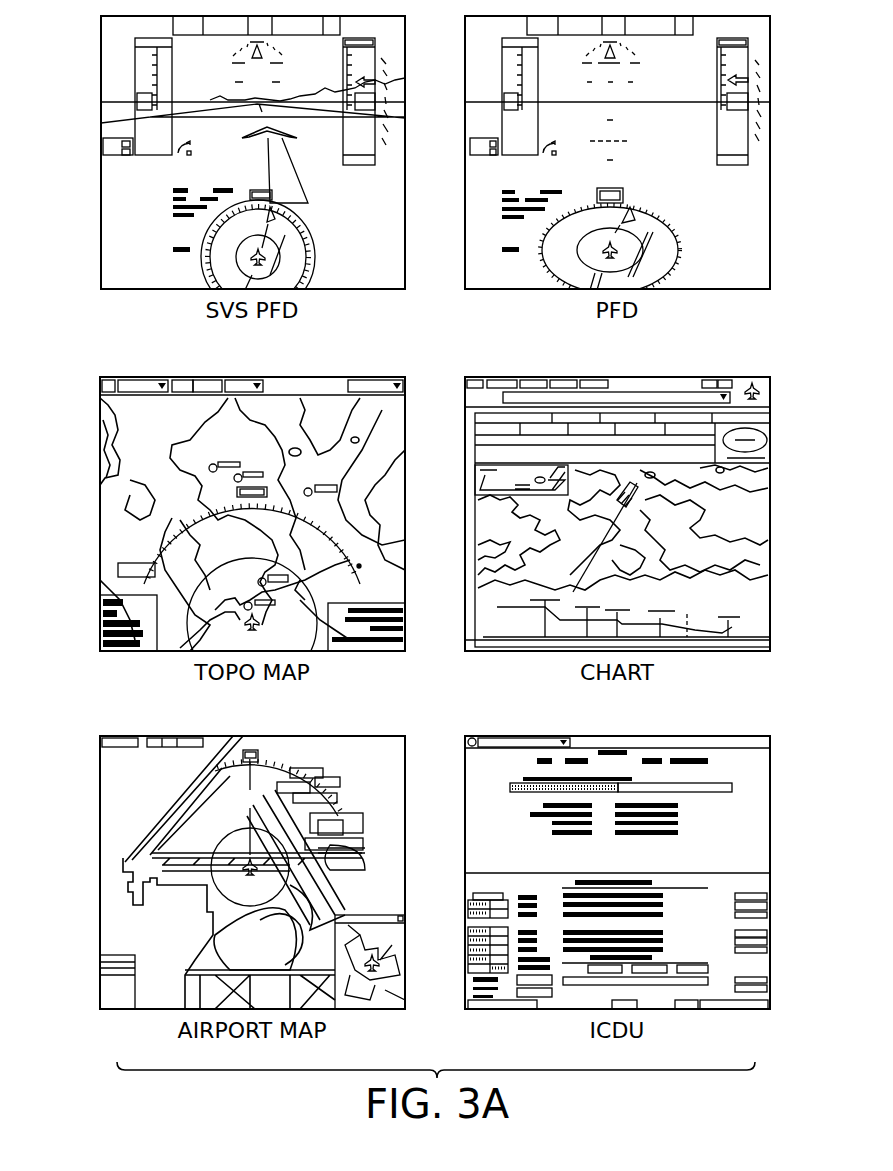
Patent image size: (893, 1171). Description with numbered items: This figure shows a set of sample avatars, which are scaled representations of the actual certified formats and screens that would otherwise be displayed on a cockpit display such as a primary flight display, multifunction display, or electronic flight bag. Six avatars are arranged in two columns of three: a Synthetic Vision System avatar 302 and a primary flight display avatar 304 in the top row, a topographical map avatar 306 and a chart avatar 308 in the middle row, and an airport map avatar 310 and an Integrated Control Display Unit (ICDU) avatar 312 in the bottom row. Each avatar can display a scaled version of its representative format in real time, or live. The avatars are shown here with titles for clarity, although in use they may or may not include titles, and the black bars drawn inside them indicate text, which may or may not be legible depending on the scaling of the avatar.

The Synthetic Vision System avatar 302 is at (100, 83).
The primary flight display avatar 304 is at (770, 225).
The topographical map avatar 306 is at (100, 542).
The chart avatar 308 is at (772, 527).
The airport map avatar 310 is at (100, 797).
The Integrated Control Display Unit avatar 312 is at (771, 944).